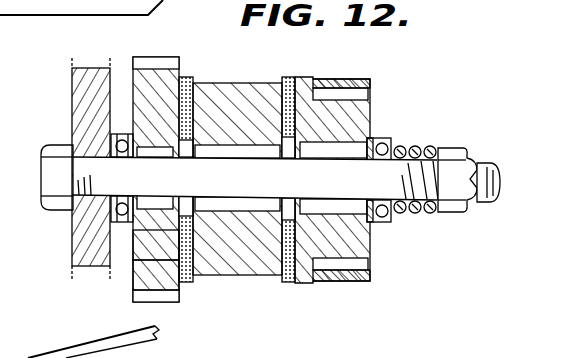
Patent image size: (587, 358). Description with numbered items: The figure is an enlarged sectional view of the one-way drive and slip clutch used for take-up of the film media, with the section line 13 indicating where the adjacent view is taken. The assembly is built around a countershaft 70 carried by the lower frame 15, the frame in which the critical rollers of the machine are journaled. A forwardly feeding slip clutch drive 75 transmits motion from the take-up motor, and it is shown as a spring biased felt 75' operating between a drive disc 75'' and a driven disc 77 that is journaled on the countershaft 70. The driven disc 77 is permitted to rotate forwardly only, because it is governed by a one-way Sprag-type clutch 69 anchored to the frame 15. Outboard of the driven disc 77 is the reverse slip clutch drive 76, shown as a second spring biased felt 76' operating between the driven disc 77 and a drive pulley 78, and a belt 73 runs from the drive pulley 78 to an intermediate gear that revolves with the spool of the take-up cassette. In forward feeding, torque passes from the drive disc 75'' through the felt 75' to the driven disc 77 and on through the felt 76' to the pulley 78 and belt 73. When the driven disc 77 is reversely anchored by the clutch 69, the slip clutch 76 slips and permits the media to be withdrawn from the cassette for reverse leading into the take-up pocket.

The section line 13— 13 is at (158, 30).
The lower frame 15 is at (80, 243).
The one-way Sprag-type clutch 69 is at (208, 158).
The countershaft 70 is at (275, 179).
The belt 73 is at (347, 79).
The forwardly feeding slip clutch drive 75 is at (211, 167).
The spring biased felt 75' is at (179, 291).
The drive disc 75'' is at (137, 268).
The reverse slip clutch drive 76 is at (303, 171).
The spring biased felt 76' is at (295, 203).
The driven disc 77 is at (267, 229).
The drive pulley 78 is at (340, 243).